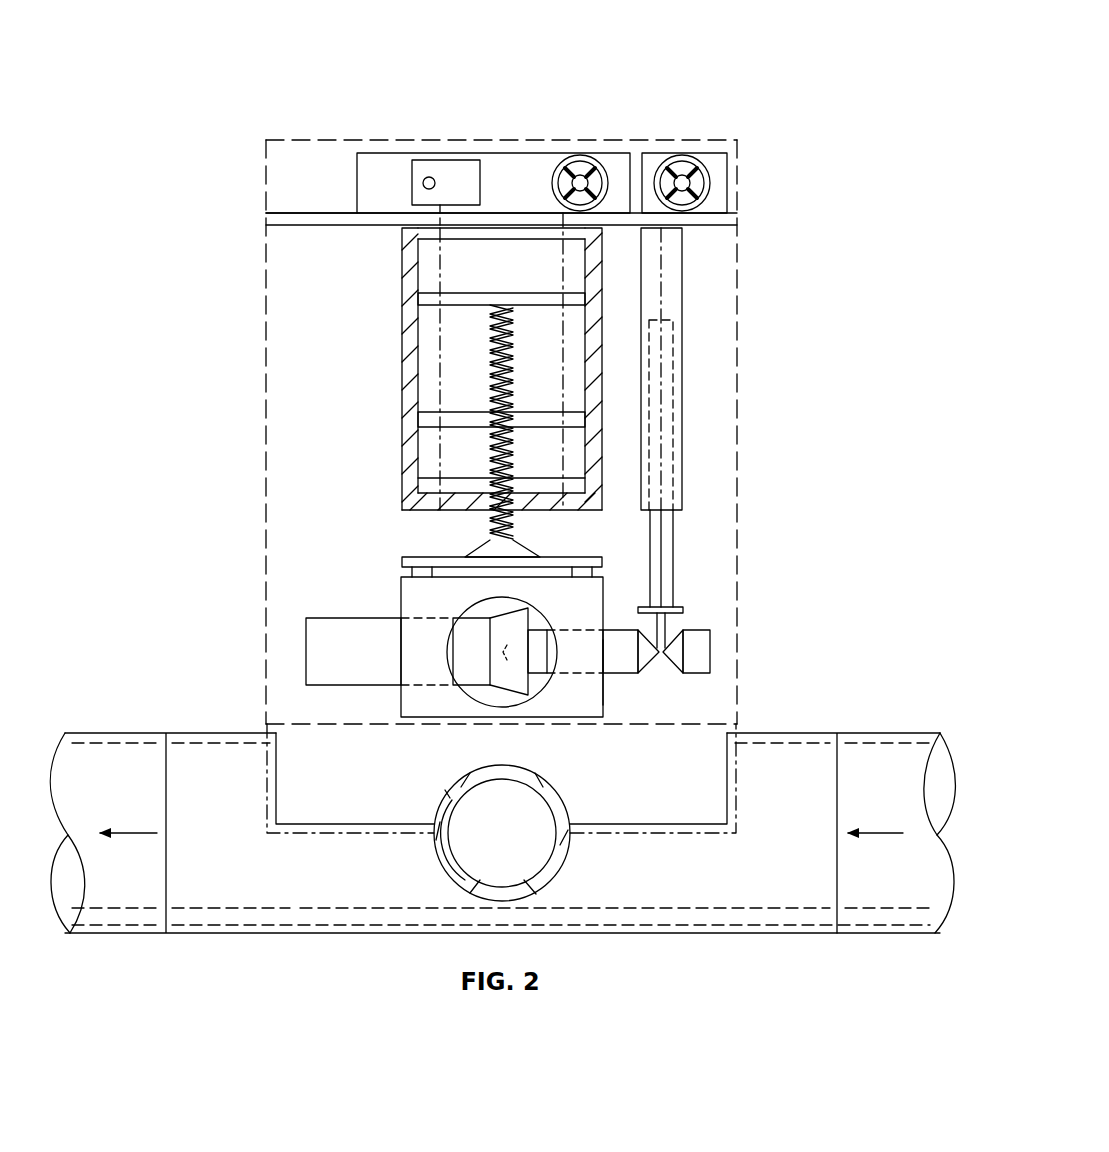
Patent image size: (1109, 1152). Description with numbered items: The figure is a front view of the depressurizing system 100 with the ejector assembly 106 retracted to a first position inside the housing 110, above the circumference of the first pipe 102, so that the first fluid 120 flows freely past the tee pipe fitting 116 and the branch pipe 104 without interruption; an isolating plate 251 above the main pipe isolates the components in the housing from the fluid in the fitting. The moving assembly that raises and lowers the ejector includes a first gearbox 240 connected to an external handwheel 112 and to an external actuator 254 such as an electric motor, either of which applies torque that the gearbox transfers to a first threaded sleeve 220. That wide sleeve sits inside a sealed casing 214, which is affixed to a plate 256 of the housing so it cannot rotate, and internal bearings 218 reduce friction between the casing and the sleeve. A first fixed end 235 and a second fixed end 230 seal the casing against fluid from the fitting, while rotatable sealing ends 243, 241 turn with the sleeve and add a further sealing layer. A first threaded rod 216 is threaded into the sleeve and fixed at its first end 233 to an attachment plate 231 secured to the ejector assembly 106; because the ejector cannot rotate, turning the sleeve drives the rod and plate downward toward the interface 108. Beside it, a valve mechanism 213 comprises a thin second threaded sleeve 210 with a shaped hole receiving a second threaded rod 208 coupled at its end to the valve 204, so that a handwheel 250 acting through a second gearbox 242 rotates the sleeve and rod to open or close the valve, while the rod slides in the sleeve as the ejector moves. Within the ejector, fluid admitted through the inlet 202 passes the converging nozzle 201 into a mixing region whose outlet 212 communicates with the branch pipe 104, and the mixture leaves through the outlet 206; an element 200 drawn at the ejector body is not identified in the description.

The depressurizing system 100 is at (749, 68).
The first pipe 102 is at (885, 745).
The branch pipe 104 is at (565, 840).
The ejector assembly 106 is at (400, 602).
The interface 108 is at (462, 848).
The housing 110 is at (367, 140).
The external handwheel 112 is at (549, 160).
The tee pipe fitting 116 is at (220, 745).
The first fluid 120 is at (880, 836).
The valve housing 200 is at (603, 690).
The nozzle 201 is at (515, 655).
The inlet 202 is at (710, 660).
The valve 204 is at (680, 603).
The outlet 206 is at (306, 651).
The second threaded rod 208 is at (673, 545).
The second threaded sleeve 210 is at (682, 416).
The outlet of mixing chamber 212 is at (500, 692).
The valve mechanism 213 is at (683, 368).
The sealed casing 214 is at (410, 386).
The first threaded rod 216 is at (492, 312).
The internal bearings 218 is at (428, 298).
The first threaded sleeve 220 is at (440, 340).
The second fixed end 230 is at (520, 510).
The attachment plate 231 is at (402, 562).
The first end of threaded rod 233 is at (482, 548).
The first fixed end 235 is at (500, 224).
The first gearbox 240 is at (500, 153).
The rotatable sealing end 241 is at (430, 487).
The second gearbox 242 is at (712, 153).
The rotatable sealing end 243 is at (430, 233).
The handwheel 250 is at (648, 160).
The isolating plate 251 is at (633, 733).
The external actuator 254 is at (437, 160).
The plate 256 is at (325, 213).